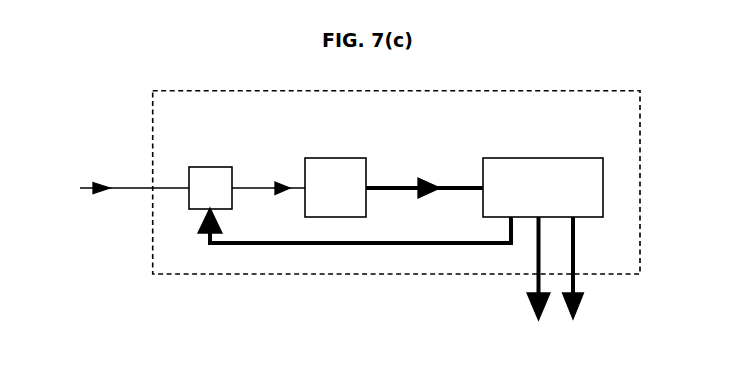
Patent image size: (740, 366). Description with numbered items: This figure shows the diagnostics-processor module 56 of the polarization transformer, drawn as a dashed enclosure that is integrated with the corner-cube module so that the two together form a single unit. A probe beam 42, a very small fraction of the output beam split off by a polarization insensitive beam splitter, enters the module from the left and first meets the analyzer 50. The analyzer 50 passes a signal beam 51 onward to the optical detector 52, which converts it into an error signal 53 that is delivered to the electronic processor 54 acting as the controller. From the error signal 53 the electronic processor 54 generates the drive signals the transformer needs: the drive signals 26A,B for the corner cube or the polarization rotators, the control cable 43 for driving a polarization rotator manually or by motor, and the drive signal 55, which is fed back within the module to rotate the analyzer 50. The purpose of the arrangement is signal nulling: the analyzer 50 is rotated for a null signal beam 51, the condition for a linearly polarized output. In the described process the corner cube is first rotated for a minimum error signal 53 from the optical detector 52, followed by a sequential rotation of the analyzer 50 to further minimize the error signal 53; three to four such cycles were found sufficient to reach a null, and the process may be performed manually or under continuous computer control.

The probe beam 42 is at (115, 188).
The control cable 43 is at (526, 306).
The drive signals 26A,B is at (580, 308).
The analyzer 50 is at (208, 167).
The signal beam 51 is at (273, 185).
The optical detector 52 is at (333, 158).
The error signal 53 is at (441, 184).
The electronic processor 54 is at (541, 158).
The drive signal 55 is at (200, 231).
The diagnostics-processor module 56 is at (641, 168).